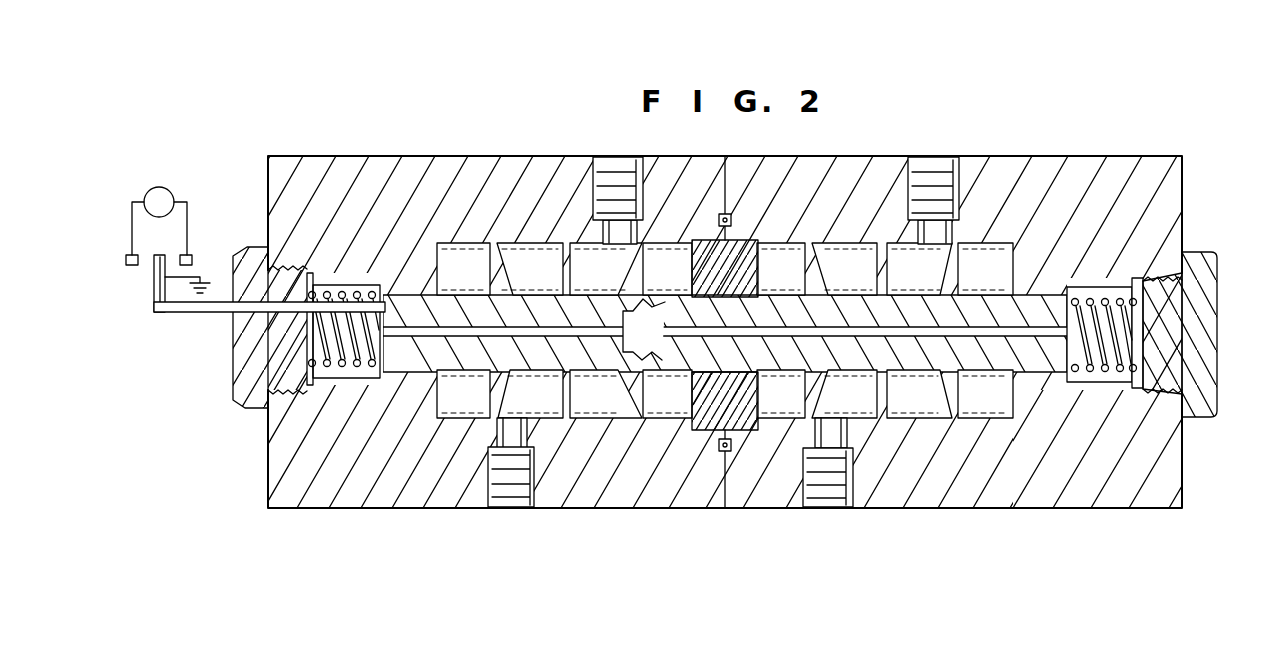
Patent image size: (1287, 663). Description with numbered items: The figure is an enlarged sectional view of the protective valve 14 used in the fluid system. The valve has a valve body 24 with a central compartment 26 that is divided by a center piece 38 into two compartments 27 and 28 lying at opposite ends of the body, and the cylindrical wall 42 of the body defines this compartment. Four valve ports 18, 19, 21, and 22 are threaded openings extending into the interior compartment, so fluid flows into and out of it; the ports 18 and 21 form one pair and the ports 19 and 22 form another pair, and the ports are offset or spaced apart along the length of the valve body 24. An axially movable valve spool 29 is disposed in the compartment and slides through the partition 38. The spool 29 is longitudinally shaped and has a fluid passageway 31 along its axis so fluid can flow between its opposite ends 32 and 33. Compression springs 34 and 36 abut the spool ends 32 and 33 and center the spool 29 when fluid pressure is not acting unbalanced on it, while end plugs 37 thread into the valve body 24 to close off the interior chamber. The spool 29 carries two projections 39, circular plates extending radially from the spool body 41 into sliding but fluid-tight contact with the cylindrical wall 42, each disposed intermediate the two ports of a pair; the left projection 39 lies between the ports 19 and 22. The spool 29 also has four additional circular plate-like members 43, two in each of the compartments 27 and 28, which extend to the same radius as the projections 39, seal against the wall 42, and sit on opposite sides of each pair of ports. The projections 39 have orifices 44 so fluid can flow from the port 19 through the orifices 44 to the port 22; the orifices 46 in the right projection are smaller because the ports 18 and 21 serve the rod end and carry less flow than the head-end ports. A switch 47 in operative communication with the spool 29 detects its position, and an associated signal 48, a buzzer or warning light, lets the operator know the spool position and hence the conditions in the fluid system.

The protective valve 14 is at (421, 166).
The valve port 18 is at (845, 500).
The valve port 19 is at (497, 503).
The valve port 21 is at (945, 172).
The valve port 22 is at (628, 170).
The valve body 24 is at (486, 166).
The central compartment 26 is at (760, 250).
The compartment 27 is at (606, 269).
The compartment 28 is at (844, 269).
The valve spool 29 is at (445, 305).
The fluid passageway 31 is at (528, 330).
The spool end 32 is at (420, 348).
The spool end 33 is at (1045, 353).
The compression spring 34 is at (360, 292).
The compression spring 36 is at (1118, 372).
The end plug 37 is at (1205, 316).
The center piece 38 is at (782, 280).
The projection 39 is at (560, 290).
The spool body 41 is at (677, 302).
The cylindrical wall 42 is at (536, 243).
The circular plate-like member 43 is at (955, 284).
The orifice 44 is at (567, 398).
The orifice 46 is at (890, 394).
The switch 47 is at (160, 292).
The signal 48 is at (168, 198).